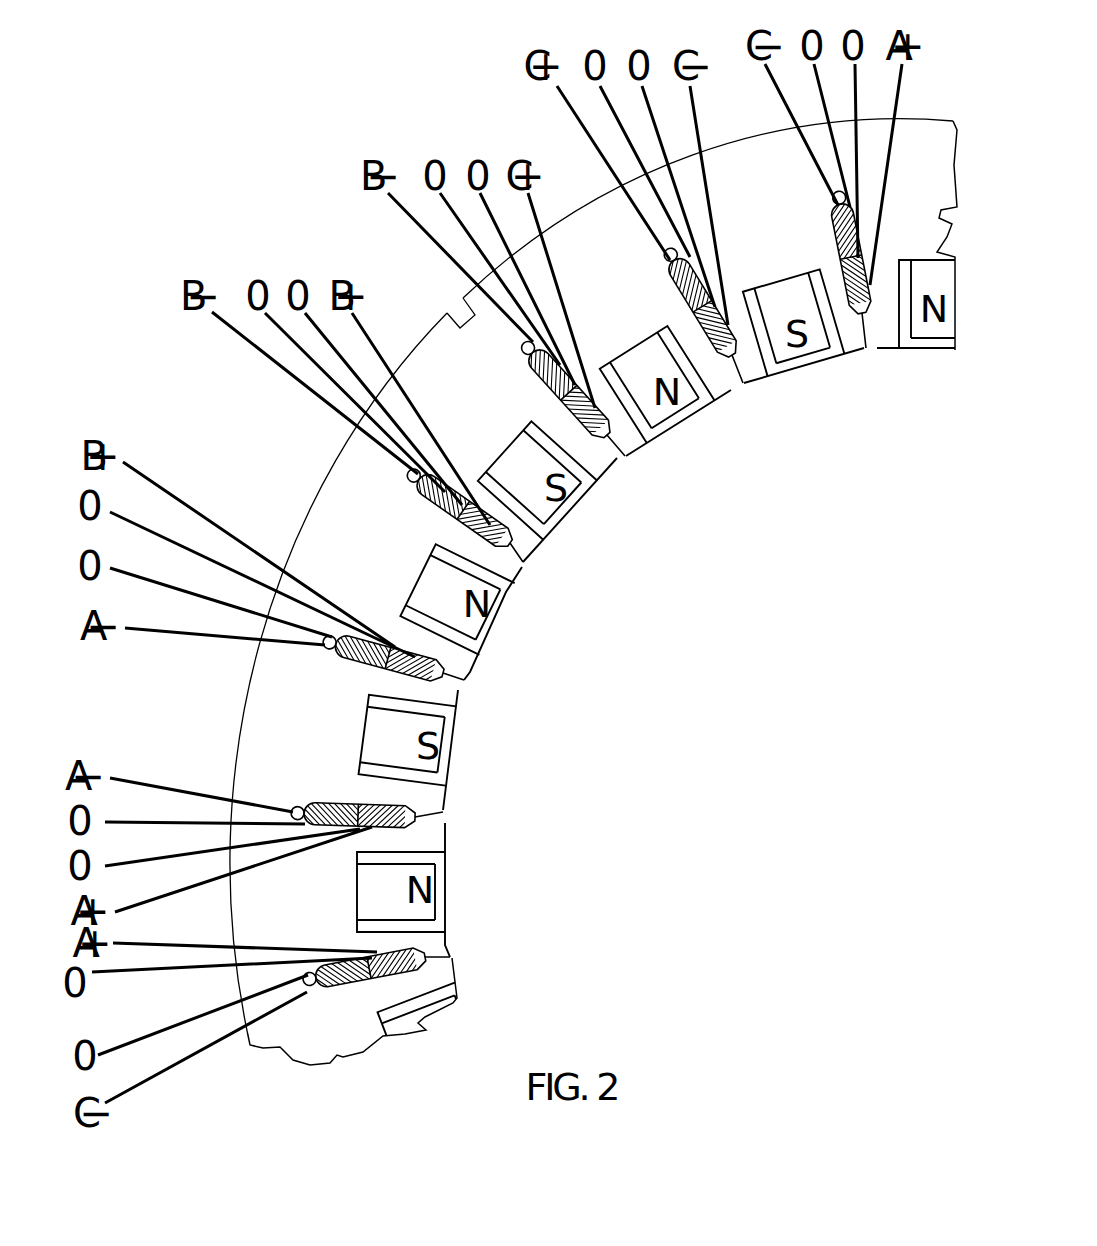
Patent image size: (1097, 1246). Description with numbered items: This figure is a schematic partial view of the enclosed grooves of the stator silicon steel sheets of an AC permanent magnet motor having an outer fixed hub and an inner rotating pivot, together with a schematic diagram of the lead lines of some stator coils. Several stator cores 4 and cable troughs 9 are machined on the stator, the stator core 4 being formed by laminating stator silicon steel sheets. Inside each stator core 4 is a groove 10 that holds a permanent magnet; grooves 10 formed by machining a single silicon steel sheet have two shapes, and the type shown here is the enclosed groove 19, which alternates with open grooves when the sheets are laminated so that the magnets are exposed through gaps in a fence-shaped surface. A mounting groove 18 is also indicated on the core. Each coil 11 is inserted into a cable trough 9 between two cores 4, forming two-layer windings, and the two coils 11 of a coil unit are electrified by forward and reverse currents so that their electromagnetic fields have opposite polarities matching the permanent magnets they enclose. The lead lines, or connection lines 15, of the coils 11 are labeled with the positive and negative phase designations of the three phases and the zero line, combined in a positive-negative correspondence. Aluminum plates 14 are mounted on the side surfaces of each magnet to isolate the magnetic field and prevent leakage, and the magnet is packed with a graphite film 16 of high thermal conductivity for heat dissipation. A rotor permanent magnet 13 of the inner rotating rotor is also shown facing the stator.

The stator core 4 is at (330, 483).
The cable trough 9 is at (457, 680).
The groove 10 is at (378, 730).
The coil 11 is at (328, 810).
The rotor permanent magnet 13 is at (385, 718).
The aluminum plate 14 is at (445, 552).
The connection line 15 is at (236, 536).
The graphite film 16 is at (437, 545).
The mounting groove 18 is at (458, 314).
The enclosed groove 19 is at (455, 745).